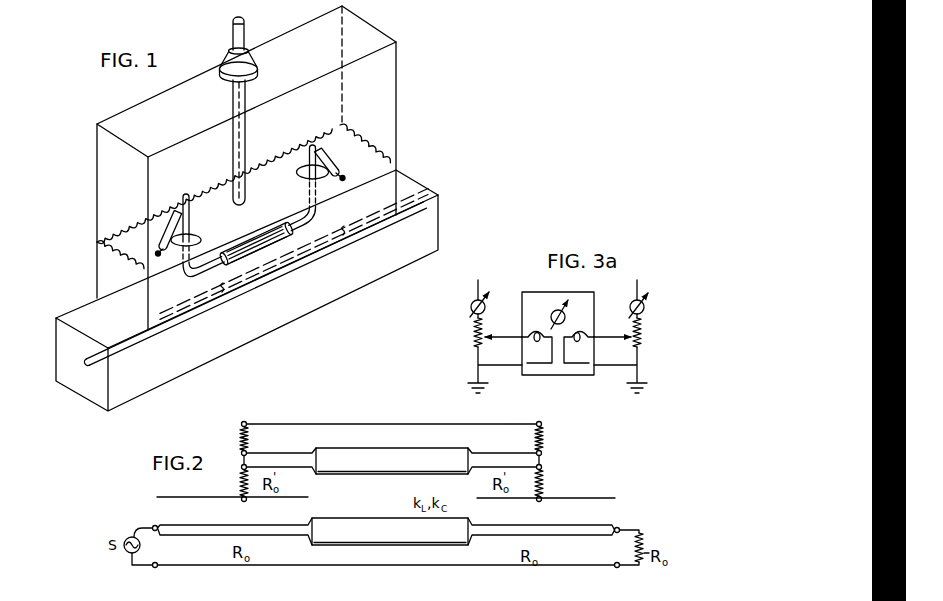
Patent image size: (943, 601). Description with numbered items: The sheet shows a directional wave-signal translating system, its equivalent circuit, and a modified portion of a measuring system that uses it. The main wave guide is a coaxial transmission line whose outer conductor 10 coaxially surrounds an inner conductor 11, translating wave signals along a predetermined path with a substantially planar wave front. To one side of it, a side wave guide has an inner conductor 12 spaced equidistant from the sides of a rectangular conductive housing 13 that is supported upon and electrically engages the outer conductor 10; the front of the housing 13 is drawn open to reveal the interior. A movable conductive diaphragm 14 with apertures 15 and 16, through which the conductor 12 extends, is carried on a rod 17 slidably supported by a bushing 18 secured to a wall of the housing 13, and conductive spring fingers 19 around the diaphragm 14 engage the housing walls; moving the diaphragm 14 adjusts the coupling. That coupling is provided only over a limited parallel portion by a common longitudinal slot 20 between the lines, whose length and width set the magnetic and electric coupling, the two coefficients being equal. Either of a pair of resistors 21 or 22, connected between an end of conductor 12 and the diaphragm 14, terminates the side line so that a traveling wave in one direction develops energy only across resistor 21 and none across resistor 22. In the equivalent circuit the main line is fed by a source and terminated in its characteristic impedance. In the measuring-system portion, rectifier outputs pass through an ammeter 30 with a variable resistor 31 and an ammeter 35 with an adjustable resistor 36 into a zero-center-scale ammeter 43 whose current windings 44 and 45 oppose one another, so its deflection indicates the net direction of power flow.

In FIG. 1, the outer conductor 10 is at (247, 290).
In FIG. 2, the outer conductor 10 is at (200, 568).
In FIG. 1, the inner conductor 11 is at (92, 366).
In FIG. 2, the inner conductor 11 is at (212, 527).
In FIG. 1, the inner conductor of the side wave guide 12 is at (313, 220).
In FIG. 2, the inner conductor of the side wave guide 12 is at (267, 455).
In FIG. 1, the conductive housing 13 is at (397, 85).
In FIG. 2, the conductive housing 13 is at (331, 423).
In FIG. 1, the movable diaphragm 14 is at (342, 193).
In FIG. 1, the aperture 15 is at (296, 175).
In FIG. 1, the aperture 16 is at (199, 236).
In FIG. 1, the rod 17 is at (245, 120).
In FIG. 1, the bushing 18 is at (248, 56).
In FIG. 1, the conductive spring fingers 19 is at (203, 191).
In FIG. 1, the longitudinal aperture or slot 20 is at (292, 237).
In FIG. 2, the longitudinal aperture or slot 20 is at (463, 497).
In FIG. 1, the resistor 21 is at (175, 210).
In FIG. 2, the resistor 21 is at (240, 441).
In FIG. 1, the resistor 22 is at (343, 164).
In FIG. 2, the resistor 22 is at (542, 481).
In FIG. 3a, the ammeter 30 is at (472, 306).
In FIG. 3a, the variable resistor 31 is at (474, 338).
In FIG. 3a, the ammeter 35 is at (633, 302).
In FIG. 3a, the adjustable resistor 36 is at (633, 338).
In FIG. 3a, the ammeter 43 is at (567, 375).
In FIG. 3a, the current winding 44 is at (536, 332).
In FIG. 3a, the current winding 45 is at (577, 332).